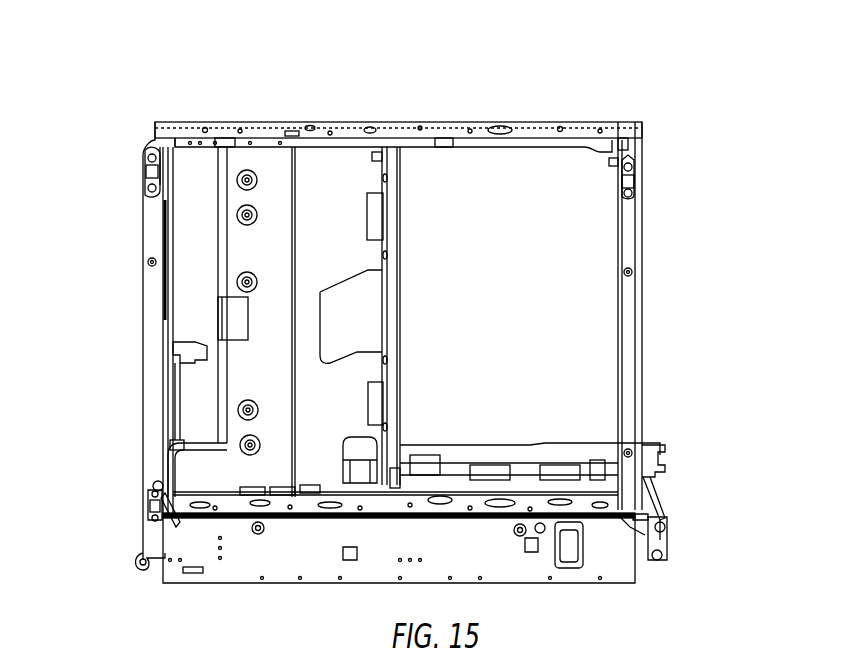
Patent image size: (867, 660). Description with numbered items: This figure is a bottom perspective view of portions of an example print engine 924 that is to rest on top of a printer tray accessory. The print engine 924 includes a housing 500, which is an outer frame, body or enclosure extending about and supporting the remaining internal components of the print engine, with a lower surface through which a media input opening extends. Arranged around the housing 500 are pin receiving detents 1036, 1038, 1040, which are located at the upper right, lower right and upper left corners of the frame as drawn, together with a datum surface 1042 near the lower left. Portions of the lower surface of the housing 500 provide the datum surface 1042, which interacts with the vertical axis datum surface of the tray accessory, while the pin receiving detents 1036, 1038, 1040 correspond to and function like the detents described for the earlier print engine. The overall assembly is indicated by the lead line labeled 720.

The chassis assembly 720 is at (280, 78).
The print engine 924 is at (143, 256).
The pin receiving detent 1040 is at (150, 177).
The datum surface 1042 is at (150, 519).
The pin receiving detent 1036 is at (641, 167).
The housing 500 is at (642, 393).
The pin receiving detent 1038 is at (660, 527).